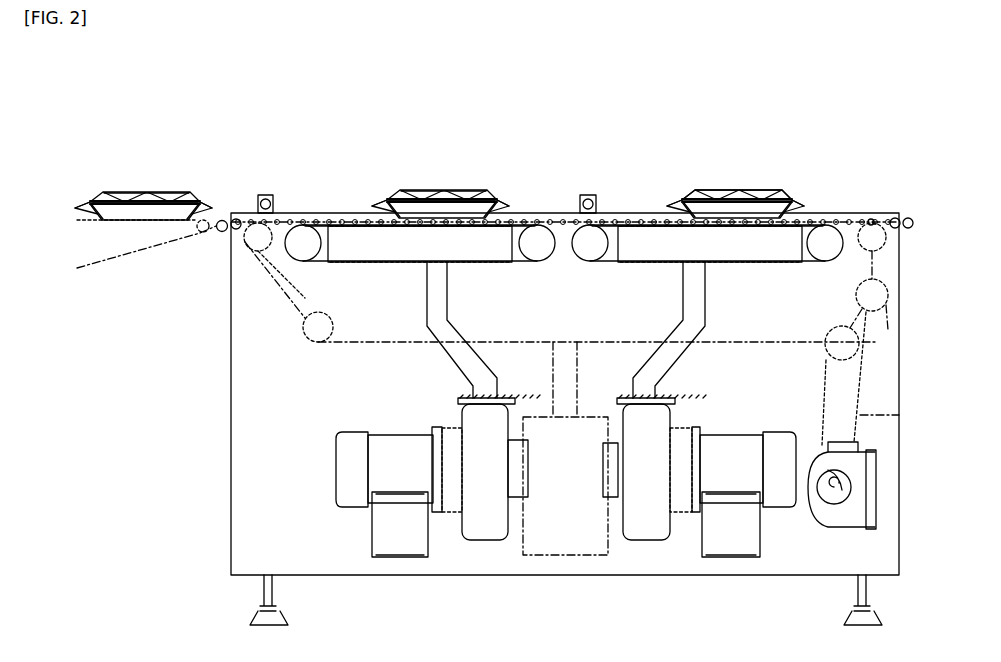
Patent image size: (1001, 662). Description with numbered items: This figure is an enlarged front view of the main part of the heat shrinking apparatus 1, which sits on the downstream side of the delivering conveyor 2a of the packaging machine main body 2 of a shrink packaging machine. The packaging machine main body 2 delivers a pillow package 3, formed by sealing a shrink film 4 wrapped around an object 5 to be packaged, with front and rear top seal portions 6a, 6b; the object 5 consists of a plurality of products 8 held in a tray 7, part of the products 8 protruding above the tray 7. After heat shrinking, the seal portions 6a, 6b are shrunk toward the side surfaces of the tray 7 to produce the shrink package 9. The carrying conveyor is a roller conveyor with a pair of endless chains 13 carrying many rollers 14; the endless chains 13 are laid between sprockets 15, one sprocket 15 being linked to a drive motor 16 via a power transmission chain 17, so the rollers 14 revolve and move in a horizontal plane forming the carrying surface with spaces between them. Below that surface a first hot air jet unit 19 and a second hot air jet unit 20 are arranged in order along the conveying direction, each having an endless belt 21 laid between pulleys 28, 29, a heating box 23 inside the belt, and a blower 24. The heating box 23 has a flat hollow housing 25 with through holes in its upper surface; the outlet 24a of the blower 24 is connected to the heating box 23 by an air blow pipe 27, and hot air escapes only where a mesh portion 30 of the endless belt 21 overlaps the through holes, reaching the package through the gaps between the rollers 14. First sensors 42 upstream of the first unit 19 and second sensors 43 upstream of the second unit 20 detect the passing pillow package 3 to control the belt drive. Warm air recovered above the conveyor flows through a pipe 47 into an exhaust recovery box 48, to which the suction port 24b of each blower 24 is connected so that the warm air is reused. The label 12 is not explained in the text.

The heat shrinking apparatus 1 is at (650, 150).
The packaging machine main body 2 is at (107, 257).
The delivering conveyor 2a is at (200, 234).
The pillow package 3 is at (120, 172).
The shrink film 4 is at (188, 200).
The object to be packaged 5 is at (178, 142).
The top seal portion 6a is at (213, 206).
The top seal portion 6b is at (74, 205).
The tray 7 is at (144, 198).
The products 8 is at (170, 198).
The shrink package 9 is at (733, 172).
The housing 12 is at (876, 347).
The endless chains 13 is at (796, 264).
The rollers 14 is at (868, 222).
The sprockets 15 is at (262, 247).
The drive motor 16 is at (825, 545).
The power transmission chain 17 is at (880, 415).
The first hot air jet unit 19 is at (445, 526).
The second hot air jet unit 20 is at (692, 526).
The endless belt 21 is at (336, 264).
The heating box 23 is at (480, 262).
The blower 24 is at (404, 433).
The outlet 24a is at (458, 401).
The suction port 24b is at (518, 500).
The housing 25 is at (366, 264).
The air blow pipe 27 is at (484, 354).
The pulley 28 is at (537, 256).
The pulley 29 is at (303, 255).
The mesh portion 30 is at (388, 228).
The first sensors 42 is at (265, 194).
The second sensors 43 is at (587, 194).
The pipe 47 is at (578, 360).
The exhaust recovery box 48 is at (567, 558).